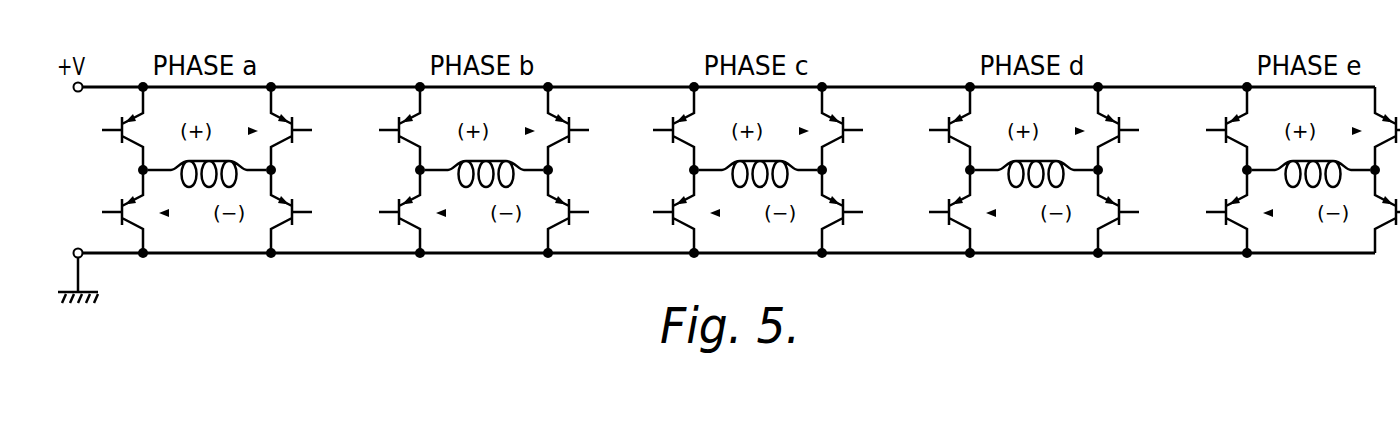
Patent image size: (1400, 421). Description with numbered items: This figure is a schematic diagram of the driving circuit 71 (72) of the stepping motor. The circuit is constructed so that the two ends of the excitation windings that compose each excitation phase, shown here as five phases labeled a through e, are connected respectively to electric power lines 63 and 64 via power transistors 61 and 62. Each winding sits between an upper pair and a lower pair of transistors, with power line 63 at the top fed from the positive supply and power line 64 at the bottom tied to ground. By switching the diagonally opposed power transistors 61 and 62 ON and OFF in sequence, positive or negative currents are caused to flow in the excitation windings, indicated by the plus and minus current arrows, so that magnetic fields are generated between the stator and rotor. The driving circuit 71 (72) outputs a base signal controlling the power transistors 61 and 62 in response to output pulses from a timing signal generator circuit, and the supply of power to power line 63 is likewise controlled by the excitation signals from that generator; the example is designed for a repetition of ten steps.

The power transistor 61 is at (104, 132).
The power transistor 62 is at (107, 210).
The electric power line 63 is at (353, 87).
The electric power line 64 is at (468, 256).
The driving circuit 71 is at (808, 141).
The driving circuit 72 is at (833, 63).